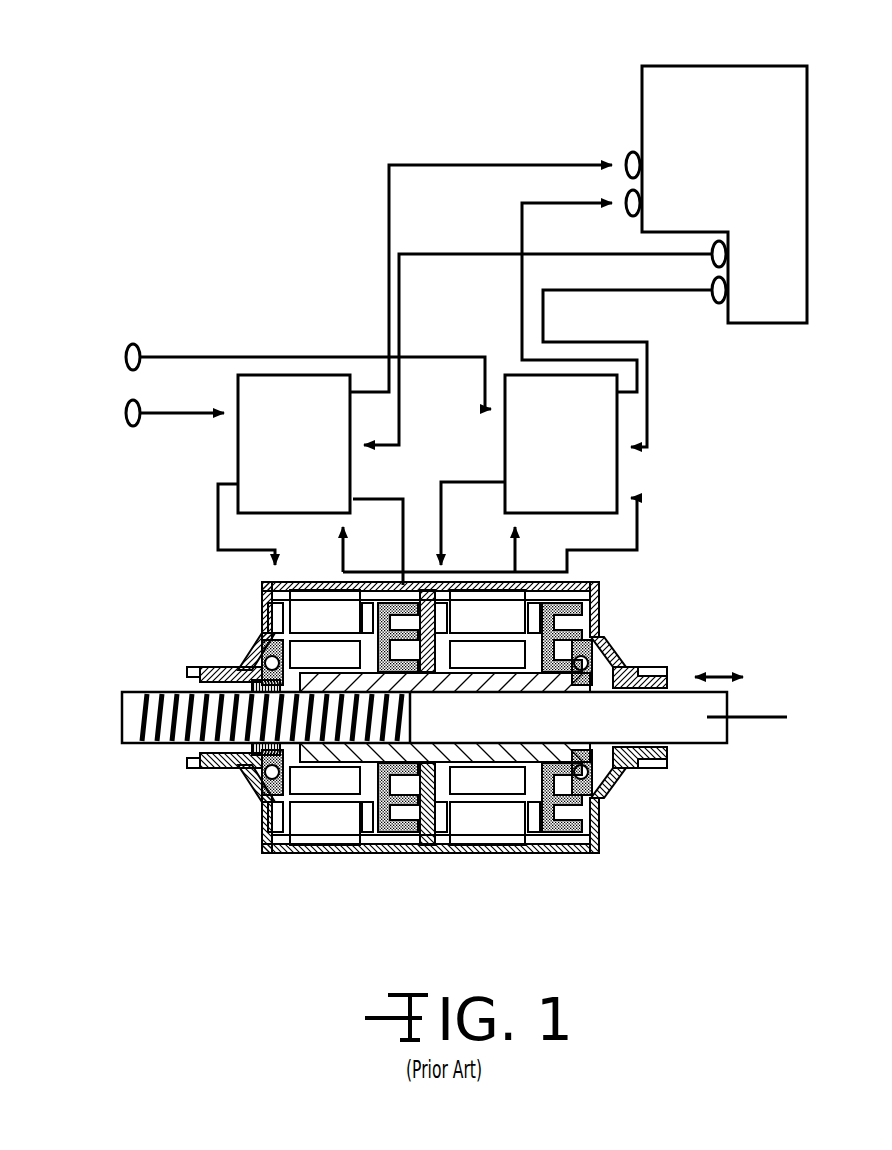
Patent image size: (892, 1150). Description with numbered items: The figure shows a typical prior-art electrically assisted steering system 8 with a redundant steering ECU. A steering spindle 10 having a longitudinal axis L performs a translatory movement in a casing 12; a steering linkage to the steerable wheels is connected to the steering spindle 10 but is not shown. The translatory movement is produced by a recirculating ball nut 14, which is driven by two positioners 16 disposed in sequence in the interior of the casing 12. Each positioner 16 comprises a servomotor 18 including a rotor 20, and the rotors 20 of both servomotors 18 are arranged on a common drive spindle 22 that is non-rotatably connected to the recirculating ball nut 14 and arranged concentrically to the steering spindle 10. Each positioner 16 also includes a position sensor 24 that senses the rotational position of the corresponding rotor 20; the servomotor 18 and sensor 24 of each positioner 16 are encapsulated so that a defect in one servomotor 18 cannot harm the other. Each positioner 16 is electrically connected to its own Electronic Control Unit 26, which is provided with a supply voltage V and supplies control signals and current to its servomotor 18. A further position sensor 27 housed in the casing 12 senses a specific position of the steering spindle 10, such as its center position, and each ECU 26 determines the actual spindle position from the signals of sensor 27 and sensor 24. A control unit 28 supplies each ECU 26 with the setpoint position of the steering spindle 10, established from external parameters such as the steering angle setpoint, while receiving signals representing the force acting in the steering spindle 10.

The electrically assisted steering system 8 is at (411, 58).
The steering spindle 10 is at (698, 722).
The casing 12 is at (243, 775).
The recirculating ball nut 14 is at (260, 672).
The positioner 16 is at (315, 878).
The servomotor 18 is at (347, 828).
The rotor 20 is at (298, 782).
The drive spindle 22 is at (487, 675).
The position sensor 24 is at (392, 818).
The Electronic Control Unit (ECU) 26 is at (248, 438).
The position sensor 27 is at (606, 656).
The control unit 28 is at (770, 293).
The longitudinal axis L is at (763, 720).